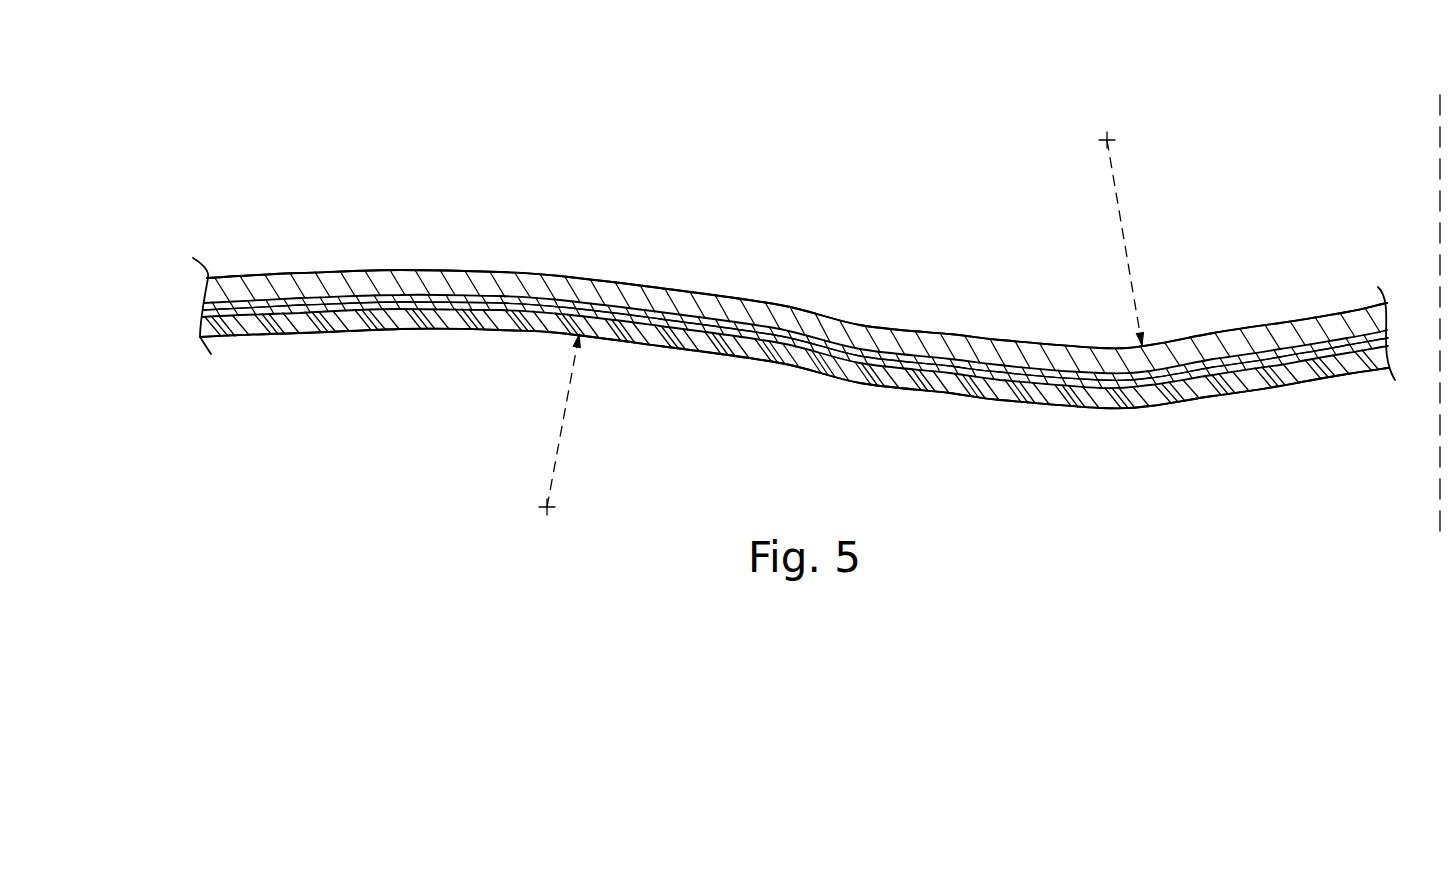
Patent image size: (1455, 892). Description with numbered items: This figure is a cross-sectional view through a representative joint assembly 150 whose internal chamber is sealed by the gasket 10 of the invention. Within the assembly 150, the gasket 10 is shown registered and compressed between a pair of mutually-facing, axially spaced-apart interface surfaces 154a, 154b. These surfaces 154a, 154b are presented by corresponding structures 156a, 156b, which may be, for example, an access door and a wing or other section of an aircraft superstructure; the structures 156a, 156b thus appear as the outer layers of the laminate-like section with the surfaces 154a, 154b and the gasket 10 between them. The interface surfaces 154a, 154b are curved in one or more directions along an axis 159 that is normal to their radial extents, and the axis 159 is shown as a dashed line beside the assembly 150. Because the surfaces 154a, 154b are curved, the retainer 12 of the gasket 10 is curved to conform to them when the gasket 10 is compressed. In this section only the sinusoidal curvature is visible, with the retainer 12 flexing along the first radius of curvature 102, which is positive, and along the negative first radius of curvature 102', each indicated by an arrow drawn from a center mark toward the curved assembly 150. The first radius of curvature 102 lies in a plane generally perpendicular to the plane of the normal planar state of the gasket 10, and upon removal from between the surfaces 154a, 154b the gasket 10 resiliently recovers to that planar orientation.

The joint assembly 150 is at (862, 100).
The structure 156a is at (206, 290).
The interface surface 154a is at (432, 298).
The interface surface 154b is at (454, 305).
The structure 156b is at (203, 339).
The gasket 10 is at (200, 307).
The retainer 12 is at (1387, 335).
The first radius of curvature 102 is at (602, 425).
The negative first radius of curvature 102' is at (1151, 238).
The axis 159 is at (1440, 502).